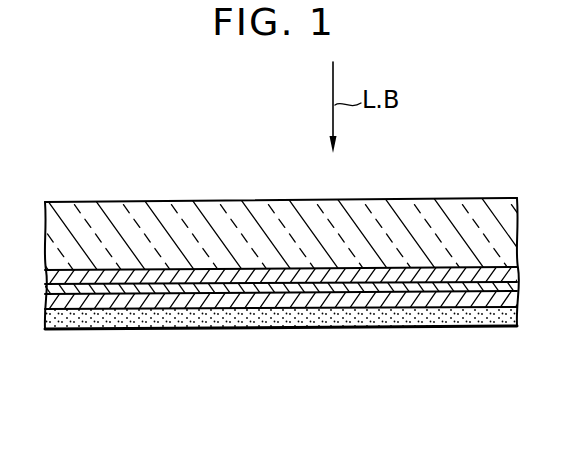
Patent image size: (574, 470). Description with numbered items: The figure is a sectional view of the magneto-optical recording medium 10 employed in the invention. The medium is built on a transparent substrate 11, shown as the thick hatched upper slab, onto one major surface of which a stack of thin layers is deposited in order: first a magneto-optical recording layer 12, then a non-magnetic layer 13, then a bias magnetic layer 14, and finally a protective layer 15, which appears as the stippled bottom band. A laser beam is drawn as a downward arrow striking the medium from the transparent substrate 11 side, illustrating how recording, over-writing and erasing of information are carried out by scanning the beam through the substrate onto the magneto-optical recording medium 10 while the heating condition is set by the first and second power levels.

The magneto-optical recording medium 10 is at (474, 151).
The transparent substrate 11 is at (168, 213).
The magneto-optical recording layer 12 is at (338, 275).
The non-magnetic layer 13 is at (273, 290).
The bias magnetic layer 14 is at (253, 303).
The protective layer 15 is at (198, 320).